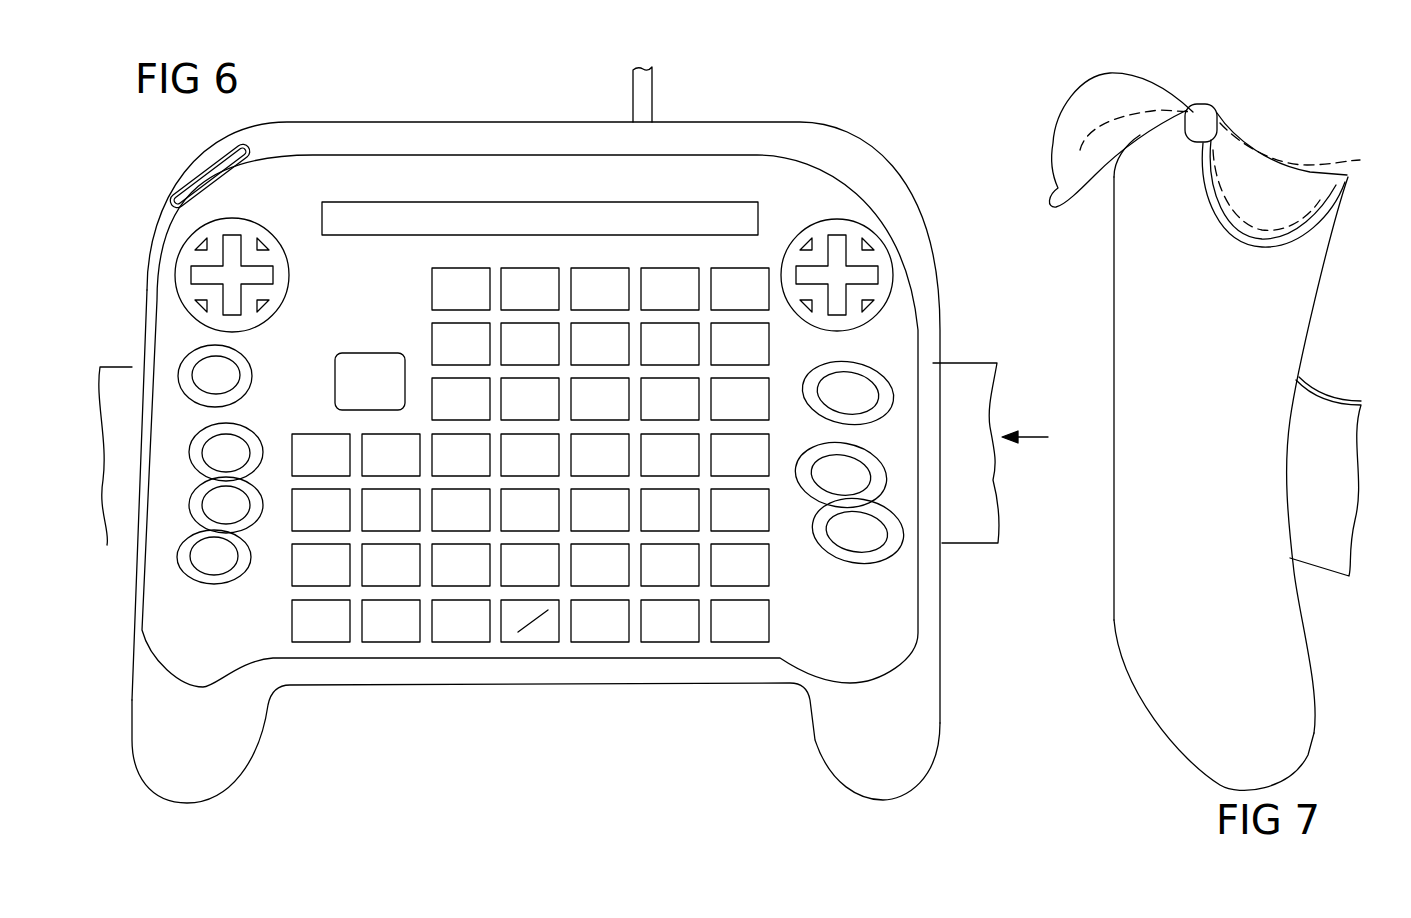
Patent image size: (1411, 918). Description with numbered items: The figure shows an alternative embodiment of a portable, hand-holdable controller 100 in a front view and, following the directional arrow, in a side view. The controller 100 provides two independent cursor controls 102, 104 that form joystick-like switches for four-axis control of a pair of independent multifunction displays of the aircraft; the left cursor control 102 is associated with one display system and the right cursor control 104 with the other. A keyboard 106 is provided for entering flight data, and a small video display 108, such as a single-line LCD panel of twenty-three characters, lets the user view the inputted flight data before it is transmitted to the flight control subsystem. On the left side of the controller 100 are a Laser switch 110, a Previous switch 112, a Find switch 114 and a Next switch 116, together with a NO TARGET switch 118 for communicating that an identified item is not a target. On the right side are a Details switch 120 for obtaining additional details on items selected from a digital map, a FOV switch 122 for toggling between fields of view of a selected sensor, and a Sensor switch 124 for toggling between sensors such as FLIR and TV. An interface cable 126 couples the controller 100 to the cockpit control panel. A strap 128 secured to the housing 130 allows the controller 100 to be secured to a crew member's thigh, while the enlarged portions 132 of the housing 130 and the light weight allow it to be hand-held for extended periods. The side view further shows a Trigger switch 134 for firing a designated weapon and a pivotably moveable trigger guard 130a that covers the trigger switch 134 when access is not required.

In FIG. 6, the portable controller 100 is at (874, 124).
In FIG. 7, the portable controller 100 is at (1293, 114).
In FIG. 6, the cursor control 102 is at (180, 277).
In FIG. 6, the cursor control 104 is at (883, 262).
In FIG. 6, the keyboard 106 is at (530, 643).
In FIG. 6, the video display 108 is at (500, 200).
In FIG. 6, the Laser switch 110 is at (197, 170).
In FIG. 6, the Previous switch 112 is at (205, 443).
In FIG. 6, the Find switch 114 is at (205, 493).
In FIG. 6, the Next switch 116 is at (192, 567).
In FIG. 6, the NO TARGET switch 118 is at (193, 365).
In FIG. 6, the Details switch 120 is at (858, 373).
In FIG. 6, the FOV switch 122 is at (868, 462).
In FIG. 6, the Sensor switch 124 is at (885, 540).
In FIG. 6, the interface cable 126 is at (646, 88).
In FIG. 6, the strap 128 is at (118, 530).
In FIG. 7, the strap 128 is at (1326, 558).
In FIG. 6, the housing 130 is at (918, 638).
In FIG. 7, the housing 130 is at (1108, 623).
In FIG. 7, the trigger guard 130a is at (1070, 117).
In FIG. 6, the enlarged portions 132 is at (235, 732).
In FIG. 7, the enlarged portions 132 is at (1290, 751).
In FIG. 7, the Trigger switch 134 is at (1273, 207).